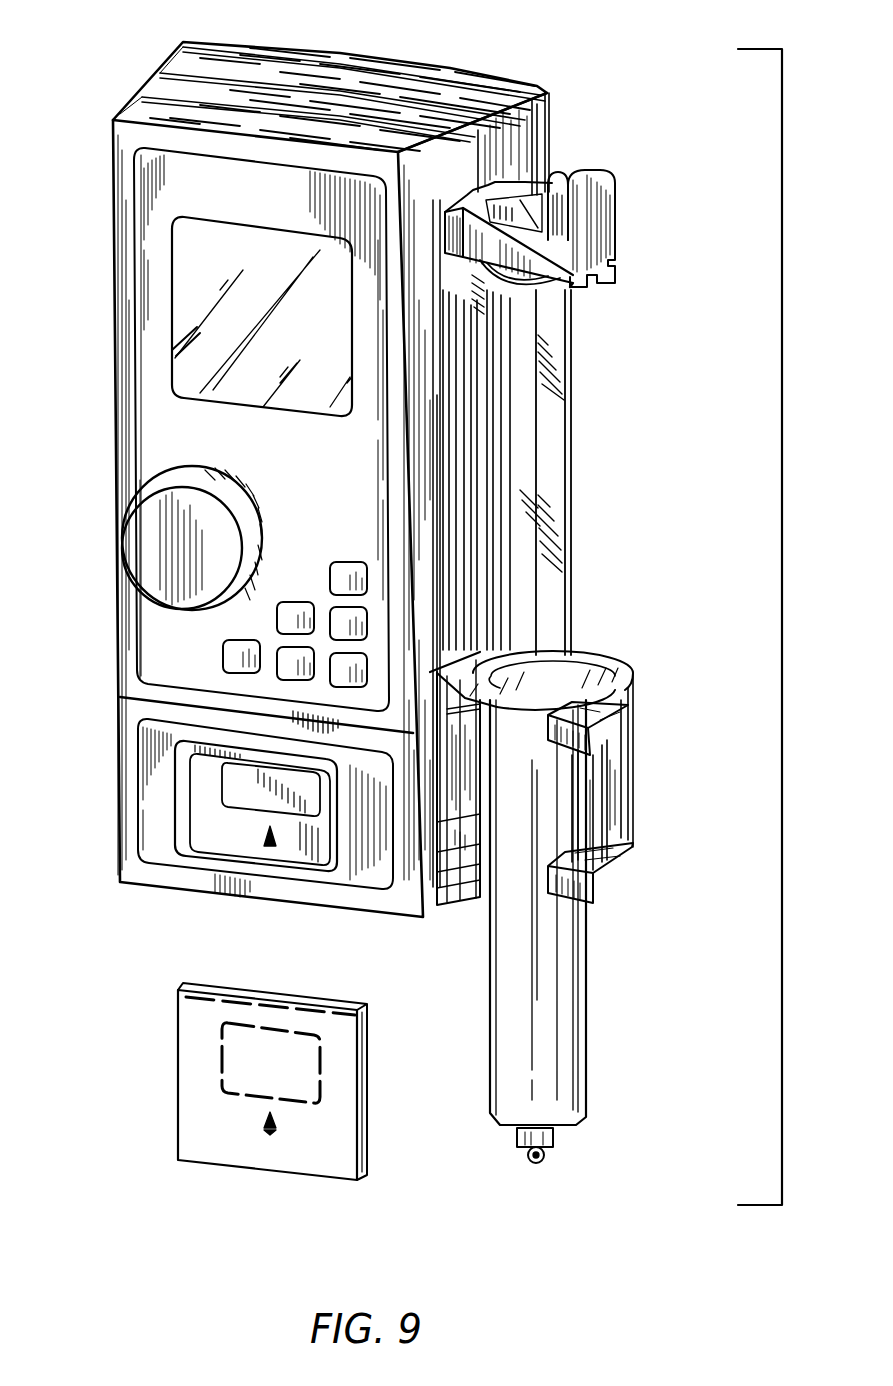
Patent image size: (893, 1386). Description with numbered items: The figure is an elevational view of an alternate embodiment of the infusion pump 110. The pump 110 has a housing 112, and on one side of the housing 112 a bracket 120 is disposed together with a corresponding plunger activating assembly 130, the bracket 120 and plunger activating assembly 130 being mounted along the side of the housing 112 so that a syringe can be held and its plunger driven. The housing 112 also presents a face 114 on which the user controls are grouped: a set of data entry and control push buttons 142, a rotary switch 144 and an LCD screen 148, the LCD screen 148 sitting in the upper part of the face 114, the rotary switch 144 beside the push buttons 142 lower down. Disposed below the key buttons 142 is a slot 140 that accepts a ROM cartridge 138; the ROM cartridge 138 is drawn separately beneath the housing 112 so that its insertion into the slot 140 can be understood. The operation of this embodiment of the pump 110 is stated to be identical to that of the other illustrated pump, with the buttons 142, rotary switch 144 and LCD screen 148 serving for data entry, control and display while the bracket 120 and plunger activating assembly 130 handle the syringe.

The infusion pump 110 is at (382, 584).
The housing 112 is at (493, 80).
The face 114 is at (279, 521).
The bracket 120 is at (578, 717).
The plunger activating assembly 130 is at (607, 230).
The ROM cartridge 138 is at (192, 1118).
The slot 140 is at (180, 835).
The data entry and control push buttons 142 is at (212, 642).
The rotary switch 144 is at (142, 540).
The LCD screen 148 is at (190, 272).